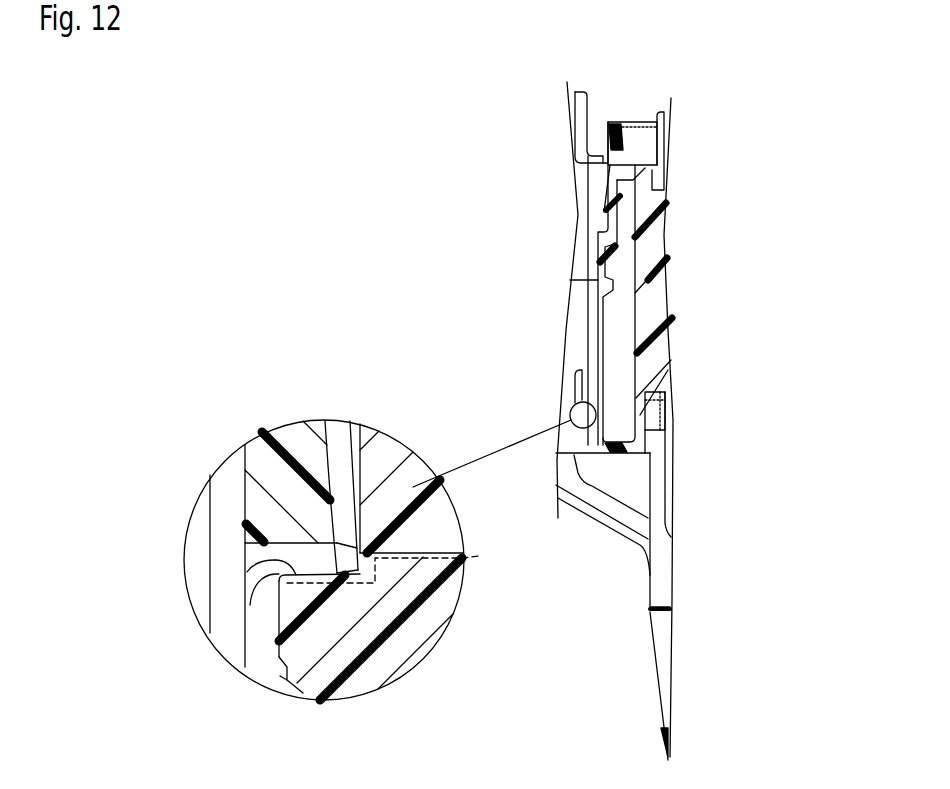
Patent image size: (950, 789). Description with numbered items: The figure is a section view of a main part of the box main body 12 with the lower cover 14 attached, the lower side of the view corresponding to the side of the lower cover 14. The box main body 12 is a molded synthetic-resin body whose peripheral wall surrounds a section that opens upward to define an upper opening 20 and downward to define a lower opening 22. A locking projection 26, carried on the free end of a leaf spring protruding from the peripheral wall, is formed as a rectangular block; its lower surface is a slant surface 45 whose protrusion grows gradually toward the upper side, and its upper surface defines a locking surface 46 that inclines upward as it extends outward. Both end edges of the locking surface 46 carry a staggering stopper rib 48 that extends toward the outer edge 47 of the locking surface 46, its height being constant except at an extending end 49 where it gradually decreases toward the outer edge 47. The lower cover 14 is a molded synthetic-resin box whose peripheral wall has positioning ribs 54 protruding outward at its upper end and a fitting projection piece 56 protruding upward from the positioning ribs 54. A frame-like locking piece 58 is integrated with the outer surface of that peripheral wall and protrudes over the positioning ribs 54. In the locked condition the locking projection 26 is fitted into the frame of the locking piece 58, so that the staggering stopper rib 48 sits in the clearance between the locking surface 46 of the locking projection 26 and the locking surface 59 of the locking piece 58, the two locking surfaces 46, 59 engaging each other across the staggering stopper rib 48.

The box main body 12 is at (686, 88).
The lower cover 14 is at (692, 528).
The upper opening 20 is at (626, 150).
The lower opening 22 is at (652, 430).
The locking projection 26 is at (330, 637).
The slant surface 45 is at (279, 677).
The locking surface 46 is at (397, 562).
The outer edge 47 is at (250, 605).
The staggering stopper rib 48 is at (334, 540).
The extending end 49 is at (262, 572).
The positioning rib 54 is at (627, 452).
The fitting projection piece 56 is at (660, 420).
The locking piece 58 is at (578, 388).
The locking surface of locking piece 59 is at (250, 558).